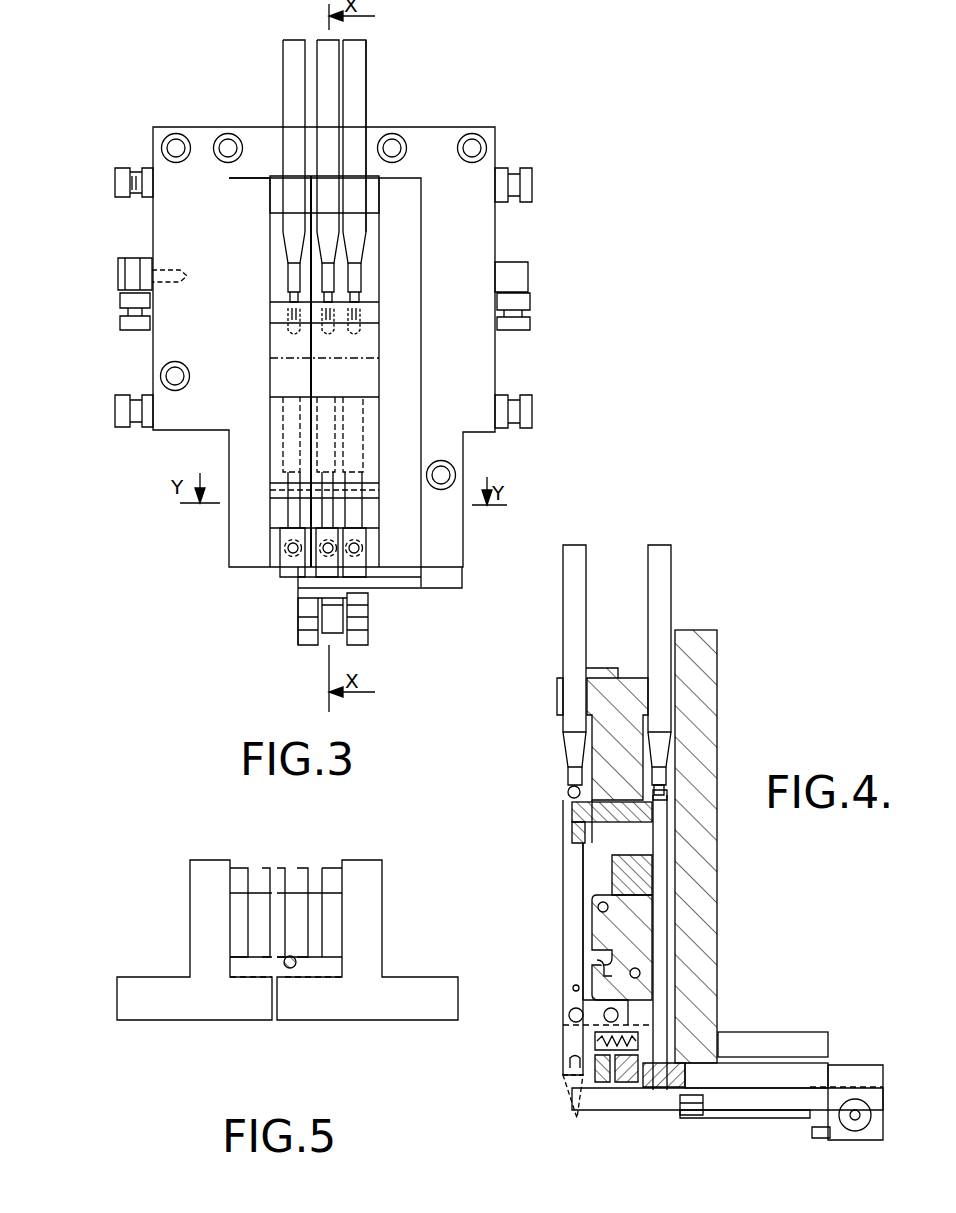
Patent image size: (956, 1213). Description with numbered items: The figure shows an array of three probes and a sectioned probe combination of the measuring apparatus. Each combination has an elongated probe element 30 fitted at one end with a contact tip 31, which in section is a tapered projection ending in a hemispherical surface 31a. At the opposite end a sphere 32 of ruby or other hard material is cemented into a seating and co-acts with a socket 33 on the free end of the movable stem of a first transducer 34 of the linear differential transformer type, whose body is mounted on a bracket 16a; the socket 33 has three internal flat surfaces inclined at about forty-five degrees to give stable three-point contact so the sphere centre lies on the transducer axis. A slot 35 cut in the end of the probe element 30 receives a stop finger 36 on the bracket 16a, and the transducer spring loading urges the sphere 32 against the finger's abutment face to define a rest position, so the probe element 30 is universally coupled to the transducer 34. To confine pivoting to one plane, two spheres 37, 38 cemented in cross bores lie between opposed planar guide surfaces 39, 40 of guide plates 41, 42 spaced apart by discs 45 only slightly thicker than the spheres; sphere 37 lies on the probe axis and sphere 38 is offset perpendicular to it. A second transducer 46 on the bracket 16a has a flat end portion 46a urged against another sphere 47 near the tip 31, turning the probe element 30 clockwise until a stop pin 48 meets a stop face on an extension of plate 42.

In FIG. 4, the bracket 16a is at (593, 690).
In FIG. 3, the probe element 30 is at (355, 386).
In FIG. 4, the probe element 30 is at (570, 923).
In FIG. 4, the contact tip 31 is at (563, 1095).
In FIG. 4, the hemispherical surface 31a is at (577, 1117).
In FIG. 3, the sphere 32 is at (355, 297).
In FIG. 4, the sphere 32 is at (570, 789).
In FIG. 3, the socket 33 is at (356, 272).
In FIG. 4, the socket 33 is at (572, 770).
In FIG. 4, the first transducer 34 is at (572, 747).
In FIG. 4, the slot 35 is at (579, 829).
In FIG. 4, the stop finger 36 is at (577, 813).
In FIG. 4, the sphere 37 is at (568, 1020).
In FIG. 4, the sphere 38 is at (617, 1012).
In FIG. 5, the planar guide surface 39 is at (310, 877).
In FIG. 5, the planar guide surface 40 is at (320, 880).
In FIG. 5, the guide plate 41 is at (332, 928).
In FIG. 4, the guide plate 42 is at (605, 977).
In FIG. 5, the guide plate 42 is at (302, 937).
In FIG. 4, the disc 45 is at (602, 925).
In FIG. 5, the disc 45 is at (312, 922).
In FIG. 4, the second transducer 46 is at (753, 1030).
In FIG. 4, the end portion 46a is at (592, 1040).
In FIG. 4, the sphere 47 is at (592, 1047).
In FIG. 4, the stop pin 48 is at (575, 987).